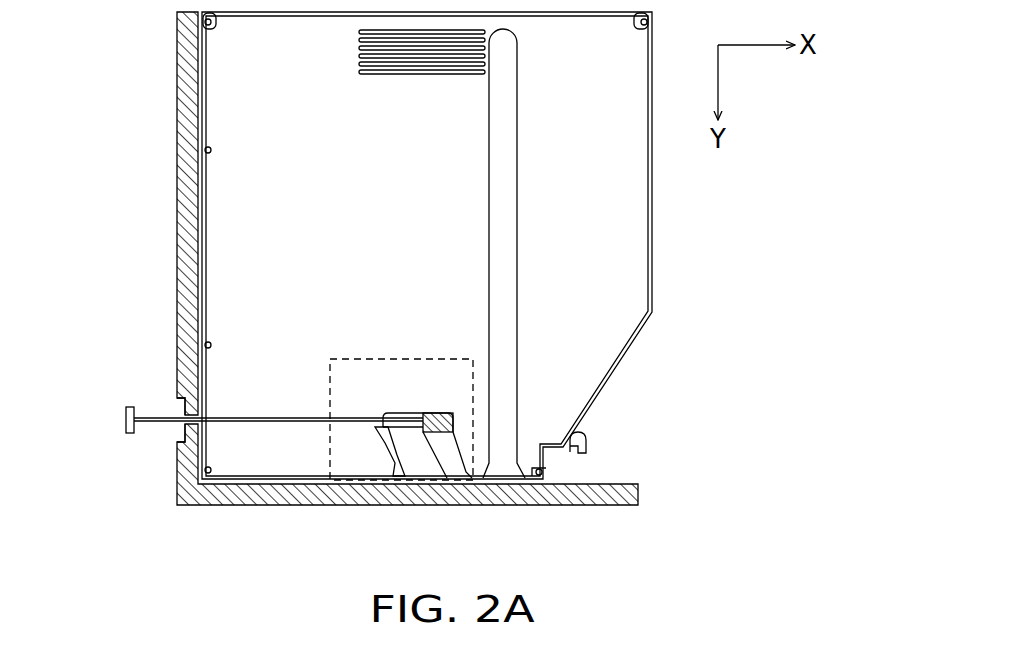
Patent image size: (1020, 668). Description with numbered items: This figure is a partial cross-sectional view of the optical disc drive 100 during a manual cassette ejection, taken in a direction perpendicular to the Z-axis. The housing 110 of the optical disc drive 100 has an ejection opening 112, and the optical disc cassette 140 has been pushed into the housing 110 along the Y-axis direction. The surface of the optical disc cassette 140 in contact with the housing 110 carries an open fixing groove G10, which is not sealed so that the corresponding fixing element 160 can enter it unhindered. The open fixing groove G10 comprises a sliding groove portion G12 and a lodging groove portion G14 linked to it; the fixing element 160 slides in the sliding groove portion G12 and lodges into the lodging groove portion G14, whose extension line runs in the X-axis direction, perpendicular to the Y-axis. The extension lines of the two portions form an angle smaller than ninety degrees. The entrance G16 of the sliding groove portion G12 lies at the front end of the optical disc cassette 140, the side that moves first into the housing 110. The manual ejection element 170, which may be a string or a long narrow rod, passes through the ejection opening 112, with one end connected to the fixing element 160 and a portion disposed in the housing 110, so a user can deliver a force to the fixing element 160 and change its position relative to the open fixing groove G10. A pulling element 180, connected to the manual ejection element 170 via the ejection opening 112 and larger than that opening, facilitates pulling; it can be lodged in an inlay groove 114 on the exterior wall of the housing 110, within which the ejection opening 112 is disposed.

The optical disc drive 100 is at (706, 557).
The housing 110 is at (178, 228).
The ejection opening 112 is at (184, 428).
The inlay groove 114 is at (180, 410).
The optical disc cassette 140 is at (636, 214).
The fixing element 160 is at (455, 421).
The manual ejection element 170 is at (250, 416).
The pulling element 180 is at (126, 420).
The open fixing groove G10 is at (385, 358).
The sliding groove portion G12 is at (370, 451).
The lodging groove portion G14 is at (383, 406).
The entrance G16 is at (421, 482).